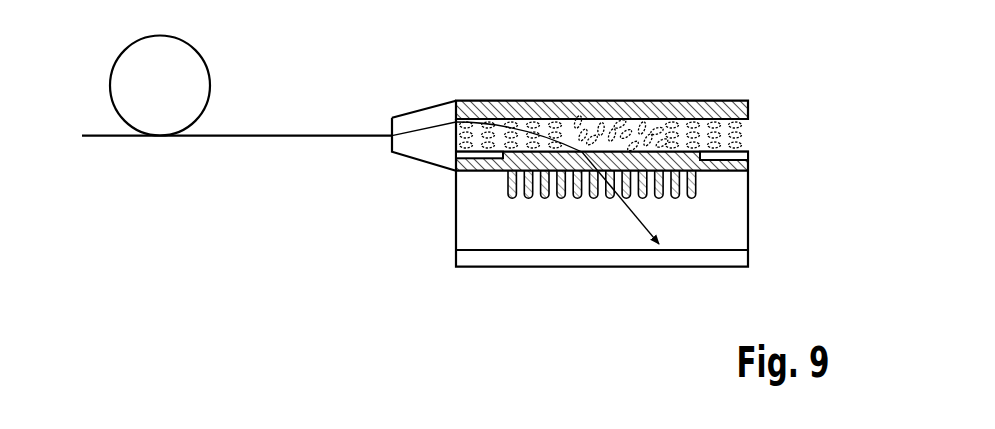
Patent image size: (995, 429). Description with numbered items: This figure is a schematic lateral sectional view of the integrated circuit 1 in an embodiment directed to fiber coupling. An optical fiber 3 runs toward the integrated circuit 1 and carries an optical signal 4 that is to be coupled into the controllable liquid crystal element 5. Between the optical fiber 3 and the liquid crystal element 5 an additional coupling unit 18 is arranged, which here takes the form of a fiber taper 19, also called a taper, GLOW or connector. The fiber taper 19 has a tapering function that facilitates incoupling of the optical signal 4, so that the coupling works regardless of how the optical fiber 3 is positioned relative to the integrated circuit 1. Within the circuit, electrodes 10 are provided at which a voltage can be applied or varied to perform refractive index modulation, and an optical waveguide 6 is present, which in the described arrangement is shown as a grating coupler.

The integrated circuit 1 is at (652, 268).
The optical fiber 3 is at (112, 68).
The optical signal 4 is at (647, 223).
The controllable liquid crystal element 5 is at (638, 178).
The optical waveguide 6 is at (528, 198).
The electrodes 10 is at (750, 156).
The coupling unit 18 is at (400, 97).
The fiber taper 19 is at (420, 97).